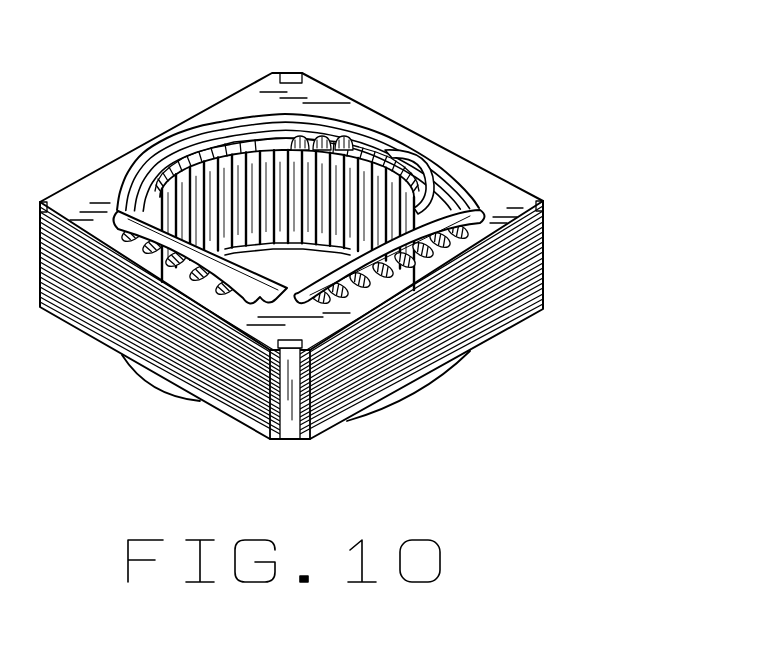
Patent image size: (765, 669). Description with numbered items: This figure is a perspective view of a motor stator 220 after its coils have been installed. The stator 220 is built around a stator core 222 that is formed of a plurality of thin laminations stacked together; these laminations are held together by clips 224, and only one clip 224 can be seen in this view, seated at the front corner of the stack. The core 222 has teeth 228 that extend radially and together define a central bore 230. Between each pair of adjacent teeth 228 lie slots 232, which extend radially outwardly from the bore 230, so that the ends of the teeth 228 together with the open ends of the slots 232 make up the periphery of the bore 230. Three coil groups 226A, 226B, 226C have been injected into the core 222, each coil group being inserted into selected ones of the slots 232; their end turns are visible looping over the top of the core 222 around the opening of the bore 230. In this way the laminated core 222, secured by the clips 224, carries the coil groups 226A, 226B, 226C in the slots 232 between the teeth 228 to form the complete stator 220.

The stator 220 is at (540, 189).
The stator core 222 is at (546, 287).
The clip 224 is at (292, 427).
The coil group 226A is at (395, 142).
The coil group 226B is at (438, 187).
The coil group 226C is at (345, 138).
The teeth 228 is at (340, 142).
The bore 230 is at (251, 194).
The slots 232 is at (178, 152).